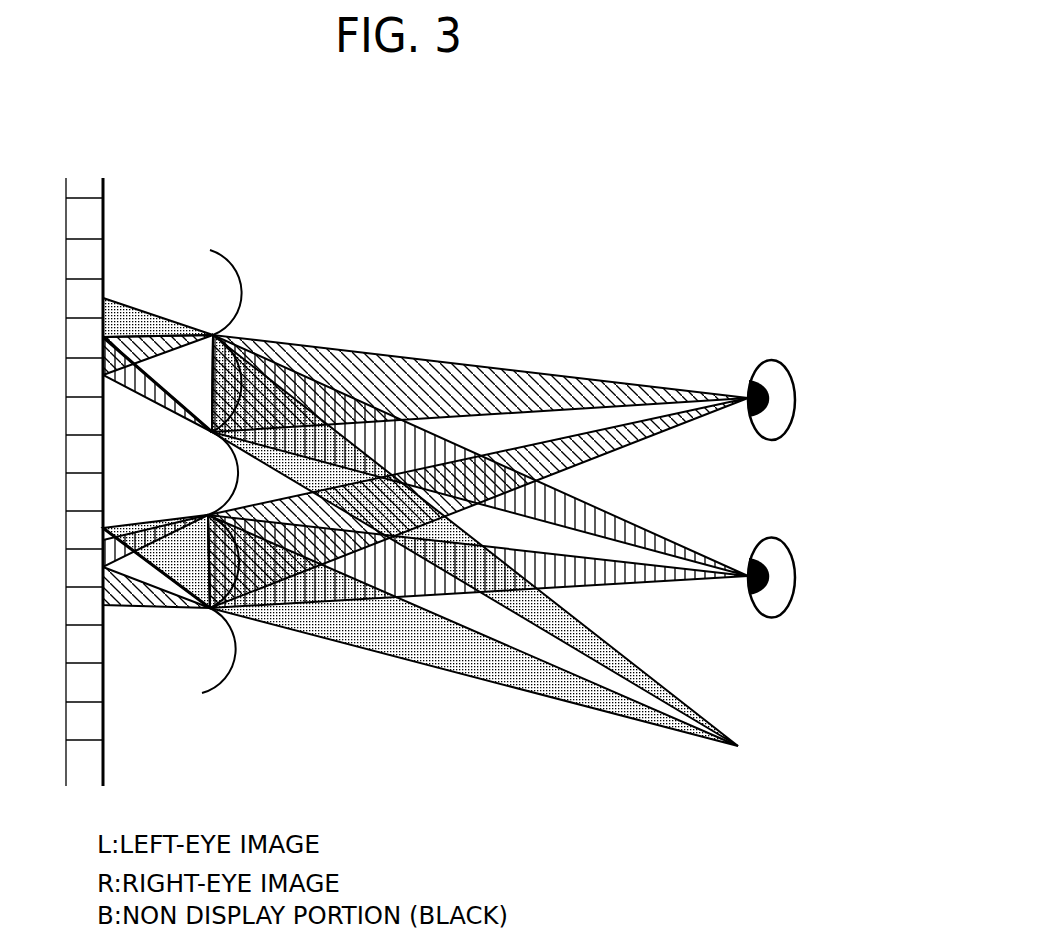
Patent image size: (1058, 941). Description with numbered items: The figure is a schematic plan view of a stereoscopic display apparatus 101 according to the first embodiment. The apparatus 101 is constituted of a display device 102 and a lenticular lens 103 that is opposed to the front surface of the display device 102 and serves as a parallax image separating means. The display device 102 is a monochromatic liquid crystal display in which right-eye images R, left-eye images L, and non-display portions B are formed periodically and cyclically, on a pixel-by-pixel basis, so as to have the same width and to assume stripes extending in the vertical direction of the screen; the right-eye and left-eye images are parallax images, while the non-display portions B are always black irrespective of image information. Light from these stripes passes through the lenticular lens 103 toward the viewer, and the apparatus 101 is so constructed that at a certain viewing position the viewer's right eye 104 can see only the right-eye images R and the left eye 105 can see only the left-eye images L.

The stereoscopic display apparatus 101 is at (219, 218).
The display device 102 is at (134, 166).
The lenticular lens 103 is at (242, 290).
The right eye 104 is at (773, 360).
The left eye 105 is at (773, 538).